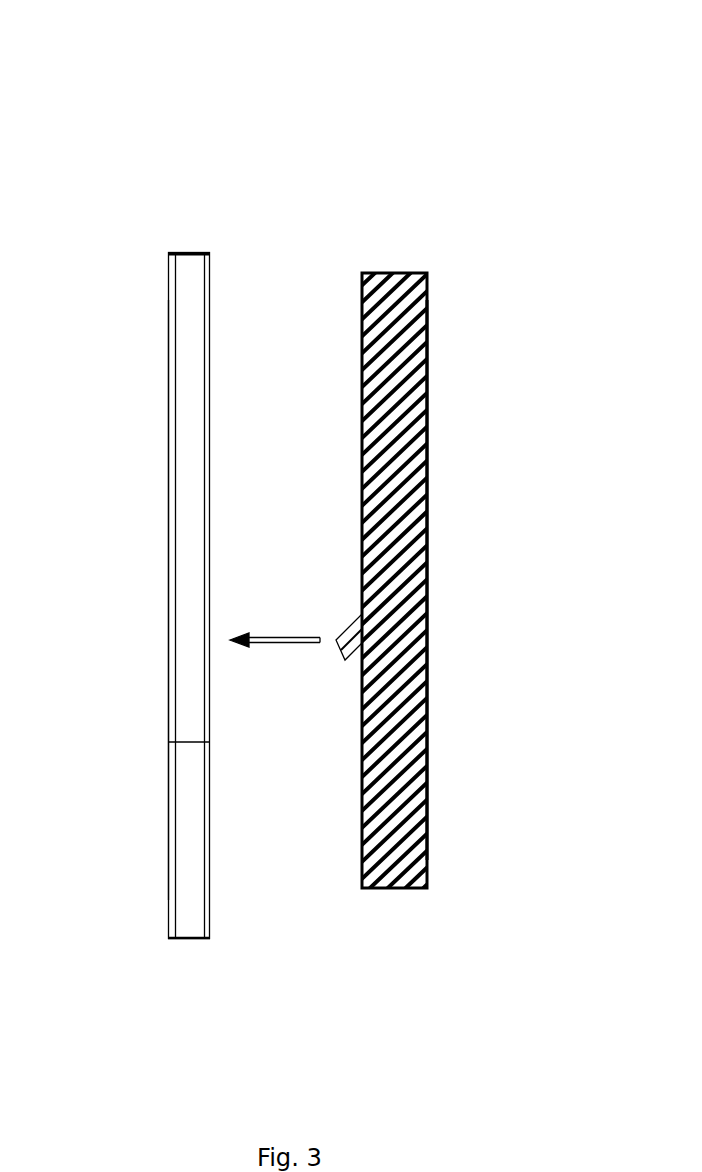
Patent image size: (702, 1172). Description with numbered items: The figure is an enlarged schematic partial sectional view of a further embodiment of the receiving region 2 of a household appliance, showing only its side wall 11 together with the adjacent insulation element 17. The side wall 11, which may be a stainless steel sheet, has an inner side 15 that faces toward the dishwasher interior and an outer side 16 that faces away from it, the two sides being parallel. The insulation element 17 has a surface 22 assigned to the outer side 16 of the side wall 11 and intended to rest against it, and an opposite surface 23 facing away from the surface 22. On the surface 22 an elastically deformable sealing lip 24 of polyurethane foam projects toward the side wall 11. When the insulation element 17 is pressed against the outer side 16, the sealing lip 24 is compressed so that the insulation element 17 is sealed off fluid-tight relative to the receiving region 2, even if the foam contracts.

The receiving region 2 is at (287, 80).
The side wall 11 is at (187, 242).
The inner side 15 is at (170, 508).
The outer side 16 is at (170, 742).
The insulation element 17 is at (404, 265).
The surface 22 is at (372, 480).
The surface 23 is at (428, 400).
The sealing lip 24 is at (347, 660).